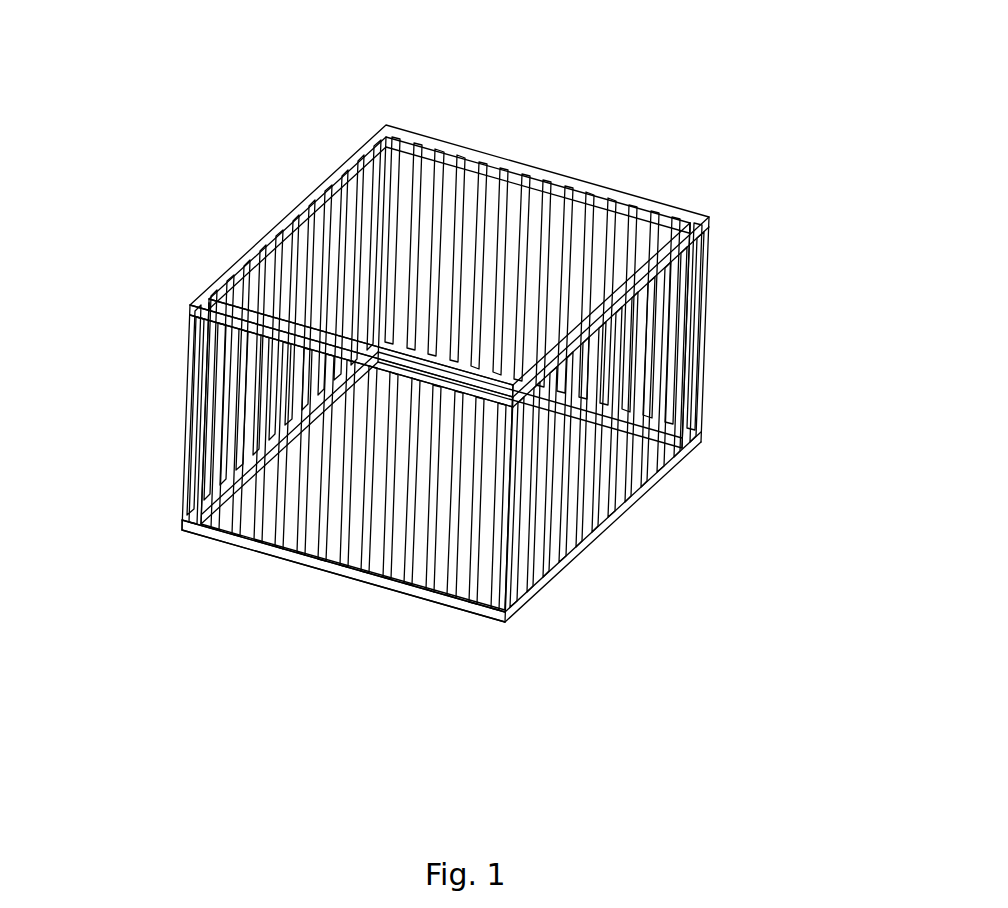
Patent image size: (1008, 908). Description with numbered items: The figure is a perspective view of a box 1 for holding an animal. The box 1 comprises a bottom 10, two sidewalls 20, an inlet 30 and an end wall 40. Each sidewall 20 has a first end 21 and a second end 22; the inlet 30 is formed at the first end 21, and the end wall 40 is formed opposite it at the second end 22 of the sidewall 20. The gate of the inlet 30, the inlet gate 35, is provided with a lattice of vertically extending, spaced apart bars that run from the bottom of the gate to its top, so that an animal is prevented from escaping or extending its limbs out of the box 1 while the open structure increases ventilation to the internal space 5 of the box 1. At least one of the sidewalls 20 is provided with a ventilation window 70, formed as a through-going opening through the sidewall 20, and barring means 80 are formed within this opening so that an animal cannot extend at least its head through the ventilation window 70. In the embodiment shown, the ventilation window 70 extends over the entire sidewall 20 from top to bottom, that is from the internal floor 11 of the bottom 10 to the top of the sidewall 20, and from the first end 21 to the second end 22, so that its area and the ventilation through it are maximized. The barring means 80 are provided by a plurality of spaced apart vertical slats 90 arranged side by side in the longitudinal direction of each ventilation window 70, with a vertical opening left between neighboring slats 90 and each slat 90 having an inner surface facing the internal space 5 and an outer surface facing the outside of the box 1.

The box 1 is at (460, 410).
The internal space 5 is at (452, 265).
The bottom 10 is at (200, 535).
The internal floor 11 is at (268, 557).
The sidewall 20 is at (460, 472).
The first end 21 is at (483, 625).
The second end 22 is at (717, 245).
The inlet 30 is at (373, 546).
The inlet gate 35 is at (307, 332).
The end wall 40 is at (567, 175).
The ventilation window 70 is at (650, 393).
The barring means 80 is at (667, 470).
The slat 90 is at (332, 262).